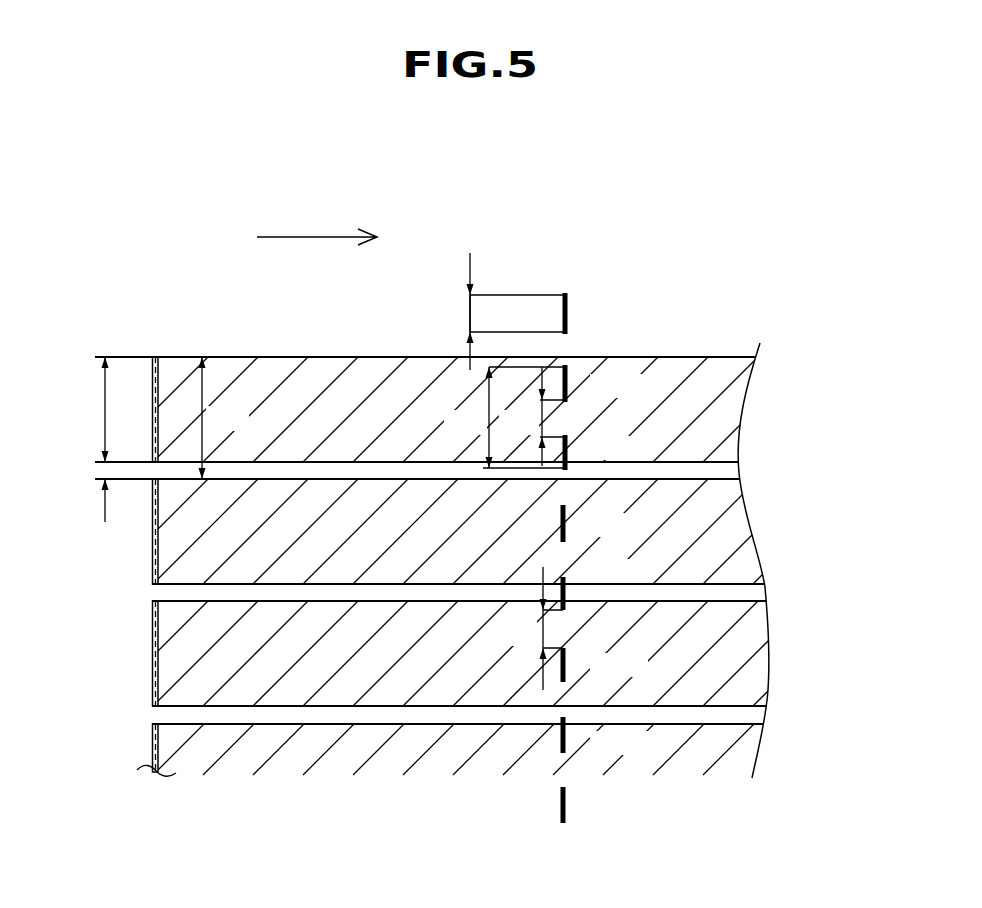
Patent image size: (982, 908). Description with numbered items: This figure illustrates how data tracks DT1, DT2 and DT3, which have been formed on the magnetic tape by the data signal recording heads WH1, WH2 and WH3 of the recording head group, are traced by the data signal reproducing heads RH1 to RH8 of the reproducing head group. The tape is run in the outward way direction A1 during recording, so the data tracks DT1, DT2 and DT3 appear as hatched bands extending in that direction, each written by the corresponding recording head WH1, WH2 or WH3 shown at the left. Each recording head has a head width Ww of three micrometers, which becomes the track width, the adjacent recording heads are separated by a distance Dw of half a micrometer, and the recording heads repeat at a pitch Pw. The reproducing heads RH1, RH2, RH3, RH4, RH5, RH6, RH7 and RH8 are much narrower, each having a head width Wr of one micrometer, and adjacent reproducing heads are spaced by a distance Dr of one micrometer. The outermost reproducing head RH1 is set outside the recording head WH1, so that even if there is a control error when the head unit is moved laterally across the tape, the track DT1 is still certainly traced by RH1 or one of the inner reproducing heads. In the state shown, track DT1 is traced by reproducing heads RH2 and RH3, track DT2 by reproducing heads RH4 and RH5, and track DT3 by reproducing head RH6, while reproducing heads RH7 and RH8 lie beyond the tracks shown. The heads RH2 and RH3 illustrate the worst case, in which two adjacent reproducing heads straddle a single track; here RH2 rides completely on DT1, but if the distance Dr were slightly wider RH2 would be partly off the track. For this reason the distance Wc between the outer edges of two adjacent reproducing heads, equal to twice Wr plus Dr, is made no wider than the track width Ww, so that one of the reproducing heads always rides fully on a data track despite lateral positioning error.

The outward way direction A1 is at (317, 225).
The data track DT1 is at (718, 411).
The data track DT2 is at (718, 533).
The data track DT3 is at (717, 658).
The data signal recording head WH1 is at (152, 376).
The data signal recording head WH2 is at (152, 563).
The data signal recording head WH3 is at (152, 661).
The data signal reproducing head RH1 is at (567, 313).
The data signal reproducing head RH2 is at (567, 386).
The data signal reproducing head RH3 is at (567, 448).
The data signal reproducing head RH4 is at (566, 524).
The data signal reproducing head RH5 is at (566, 592).
The data signal reproducing head RH6 is at (566, 665).
The data signal reproducing head RH7 is at (566, 743).
The data signal reproducing head RH8 is at (566, 805).
The head width of data signal recording head Ww is at (85, 409).
The distance of data signal recording heads Dw is at (82, 491).
The pitch of data signal recording heads Pw is at (222, 418).
The head width of data signal reproducing head Wr is at (452, 311).
The distance between both outsides of two adjacent data signal reproducing heads Wc is at (506, 417).
The distance of data signal reproducing heads Dr is at (531, 528).